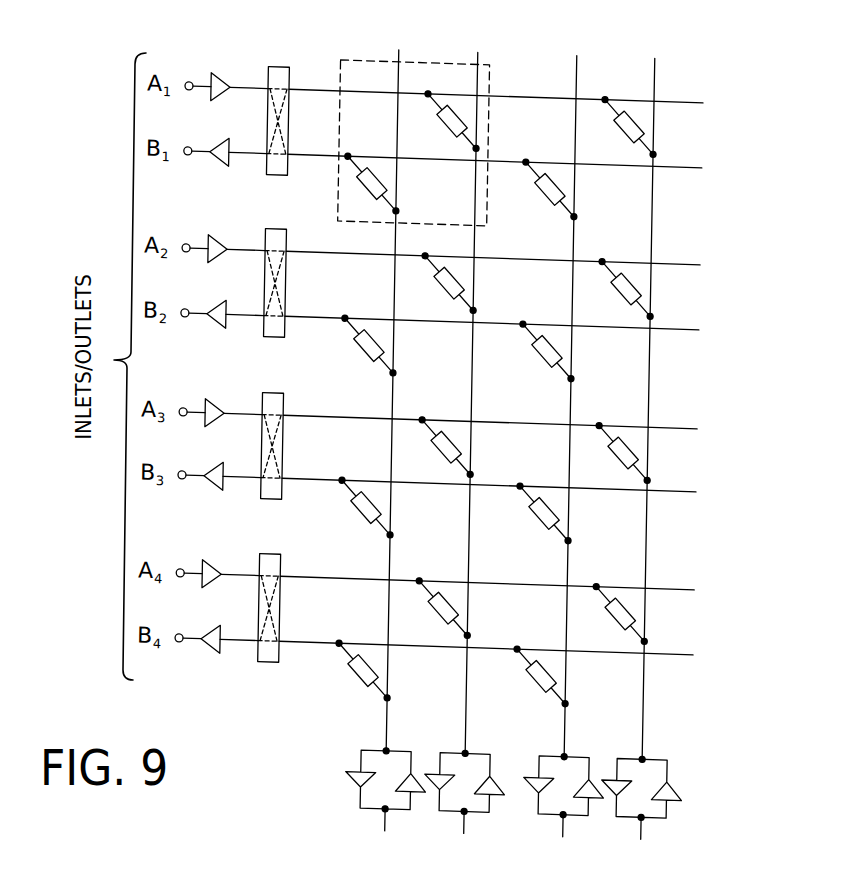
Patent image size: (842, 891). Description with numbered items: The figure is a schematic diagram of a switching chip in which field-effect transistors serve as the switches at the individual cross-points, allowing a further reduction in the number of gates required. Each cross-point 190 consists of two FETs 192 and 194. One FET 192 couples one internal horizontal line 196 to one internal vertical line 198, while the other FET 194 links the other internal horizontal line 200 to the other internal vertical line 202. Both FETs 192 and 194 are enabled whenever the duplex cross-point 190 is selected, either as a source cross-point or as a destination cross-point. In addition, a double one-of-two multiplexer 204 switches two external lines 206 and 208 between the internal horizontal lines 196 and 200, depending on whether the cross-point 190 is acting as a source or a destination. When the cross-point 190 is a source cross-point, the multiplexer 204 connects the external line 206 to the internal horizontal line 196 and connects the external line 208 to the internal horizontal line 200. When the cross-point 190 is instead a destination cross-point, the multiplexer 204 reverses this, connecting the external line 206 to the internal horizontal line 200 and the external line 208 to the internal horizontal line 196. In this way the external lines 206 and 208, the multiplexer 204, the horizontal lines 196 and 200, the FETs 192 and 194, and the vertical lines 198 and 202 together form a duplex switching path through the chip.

The cross-point 190 is at (416, 55).
The FET 192 is at (473, 114).
The FET 194 is at (365, 181).
The internal horizontal line 196 is at (314, 85).
The internal vertical line 198 is at (478, 283).
The internal horizontal line 200 is at (311, 150).
The internal vertical line 202 is at (397, 283).
The double 1-of-2 multiplexer 204 is at (279, 63).
The external line 206 is at (205, 80).
The external line 208 is at (203, 150).